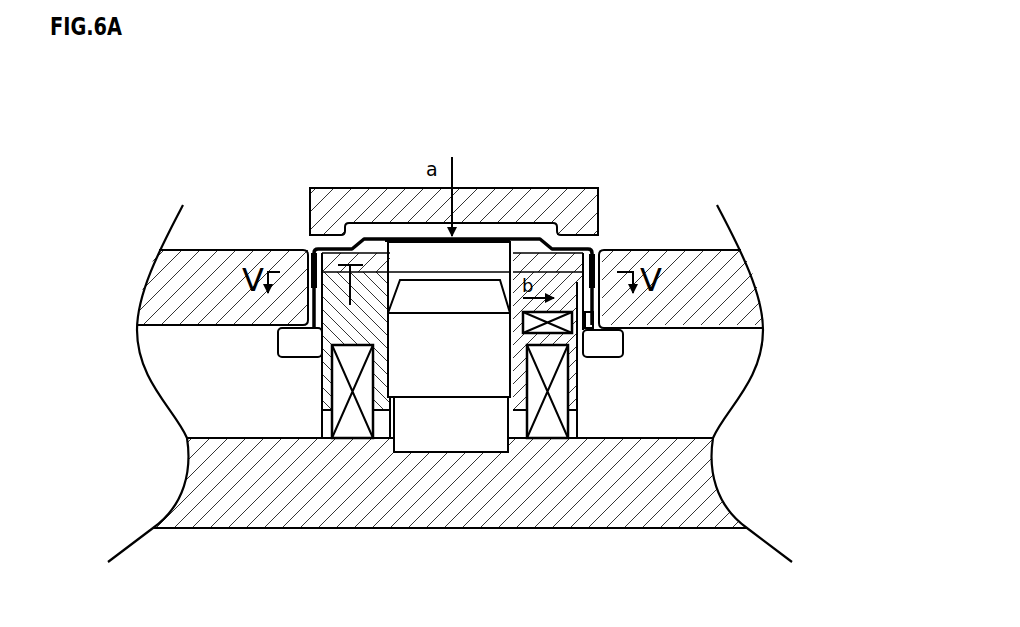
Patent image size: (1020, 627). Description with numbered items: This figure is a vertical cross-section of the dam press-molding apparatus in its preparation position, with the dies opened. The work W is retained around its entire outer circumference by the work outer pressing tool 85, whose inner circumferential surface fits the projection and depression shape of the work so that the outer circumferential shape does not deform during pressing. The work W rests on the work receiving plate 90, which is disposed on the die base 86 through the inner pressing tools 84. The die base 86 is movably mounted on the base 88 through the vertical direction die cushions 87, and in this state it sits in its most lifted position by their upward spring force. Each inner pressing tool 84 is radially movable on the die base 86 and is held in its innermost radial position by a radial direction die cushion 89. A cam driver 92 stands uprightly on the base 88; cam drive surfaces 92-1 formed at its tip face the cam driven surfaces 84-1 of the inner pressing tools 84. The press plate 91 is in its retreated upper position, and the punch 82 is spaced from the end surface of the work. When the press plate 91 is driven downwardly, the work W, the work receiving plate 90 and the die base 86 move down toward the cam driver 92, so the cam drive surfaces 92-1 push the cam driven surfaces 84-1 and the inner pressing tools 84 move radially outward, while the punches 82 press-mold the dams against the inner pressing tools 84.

The punch 82 is at (590, 332).
The inner pressing tool 84 is at (600, 250).
The cam driven surface 84-1 is at (586, 308).
The work outer pressing tool 85 is at (222, 268).
The die base 86 is at (348, 332).
The vertical direction die cushion 87 is at (549, 335).
The base 88 is at (544, 512).
The radial direction die cushion 89 is at (547, 313).
The work receiving plate 90 is at (372, 258).
The press plate 91 is at (345, 198).
The cam driver 92 is at (415, 430).
The cam drive surface 92-1 is at (533, 320).
The work W is at (417, 237).